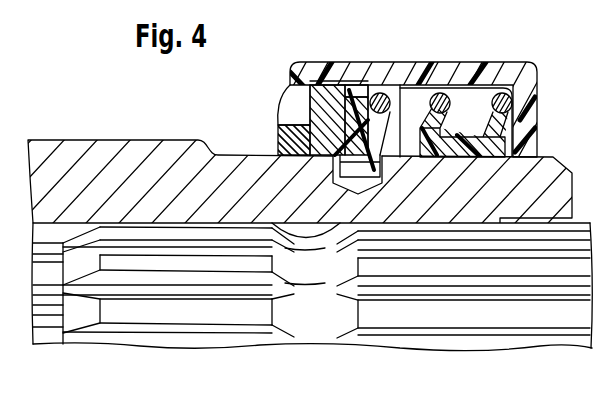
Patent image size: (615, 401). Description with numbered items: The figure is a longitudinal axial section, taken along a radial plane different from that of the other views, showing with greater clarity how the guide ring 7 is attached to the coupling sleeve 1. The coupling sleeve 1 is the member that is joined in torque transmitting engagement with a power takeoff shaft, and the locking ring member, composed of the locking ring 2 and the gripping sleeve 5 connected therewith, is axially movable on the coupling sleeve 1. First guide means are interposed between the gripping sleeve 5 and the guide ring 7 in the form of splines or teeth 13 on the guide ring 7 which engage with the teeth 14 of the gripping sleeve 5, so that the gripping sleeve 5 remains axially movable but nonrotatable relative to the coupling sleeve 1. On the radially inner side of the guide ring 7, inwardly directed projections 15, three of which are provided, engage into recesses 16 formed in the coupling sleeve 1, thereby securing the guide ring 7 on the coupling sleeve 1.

The coupling sleeve 1 is at (115, 148).
The locking ring 2 is at (328, 102).
The gripping sleeve 5 is at (468, 70).
The guide ring 7 is at (352, 118).
The teeth 13 is at (357, 88).
The teeth 14 is at (487, 88).
The projections 15 is at (340, 164).
The recesses 16 is at (372, 175).